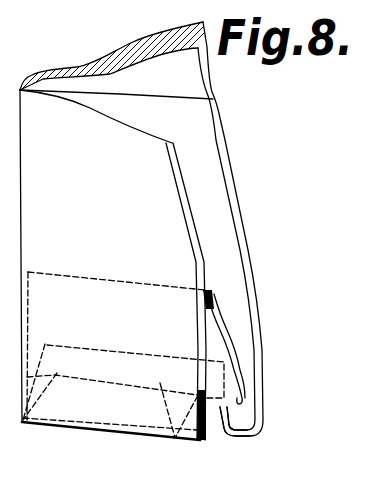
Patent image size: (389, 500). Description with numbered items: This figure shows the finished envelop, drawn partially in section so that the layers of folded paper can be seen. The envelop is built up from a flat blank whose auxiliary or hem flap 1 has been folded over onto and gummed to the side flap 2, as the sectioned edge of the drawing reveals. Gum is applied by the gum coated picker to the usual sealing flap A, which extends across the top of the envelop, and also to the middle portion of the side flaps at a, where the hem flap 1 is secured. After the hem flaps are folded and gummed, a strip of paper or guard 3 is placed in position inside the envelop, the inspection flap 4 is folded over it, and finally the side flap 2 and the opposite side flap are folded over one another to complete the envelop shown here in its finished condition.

The auxiliary or hem flap 1 is at (207, 441).
The side flap 2 is at (200, 220).
The strip of paper or guard 3 is at (218, 333).
The inspection flap 4 is at (223, 436).
The gummed middle portion of the side flaps a is at (211, 290).
The sealing flap A is at (113, 60).